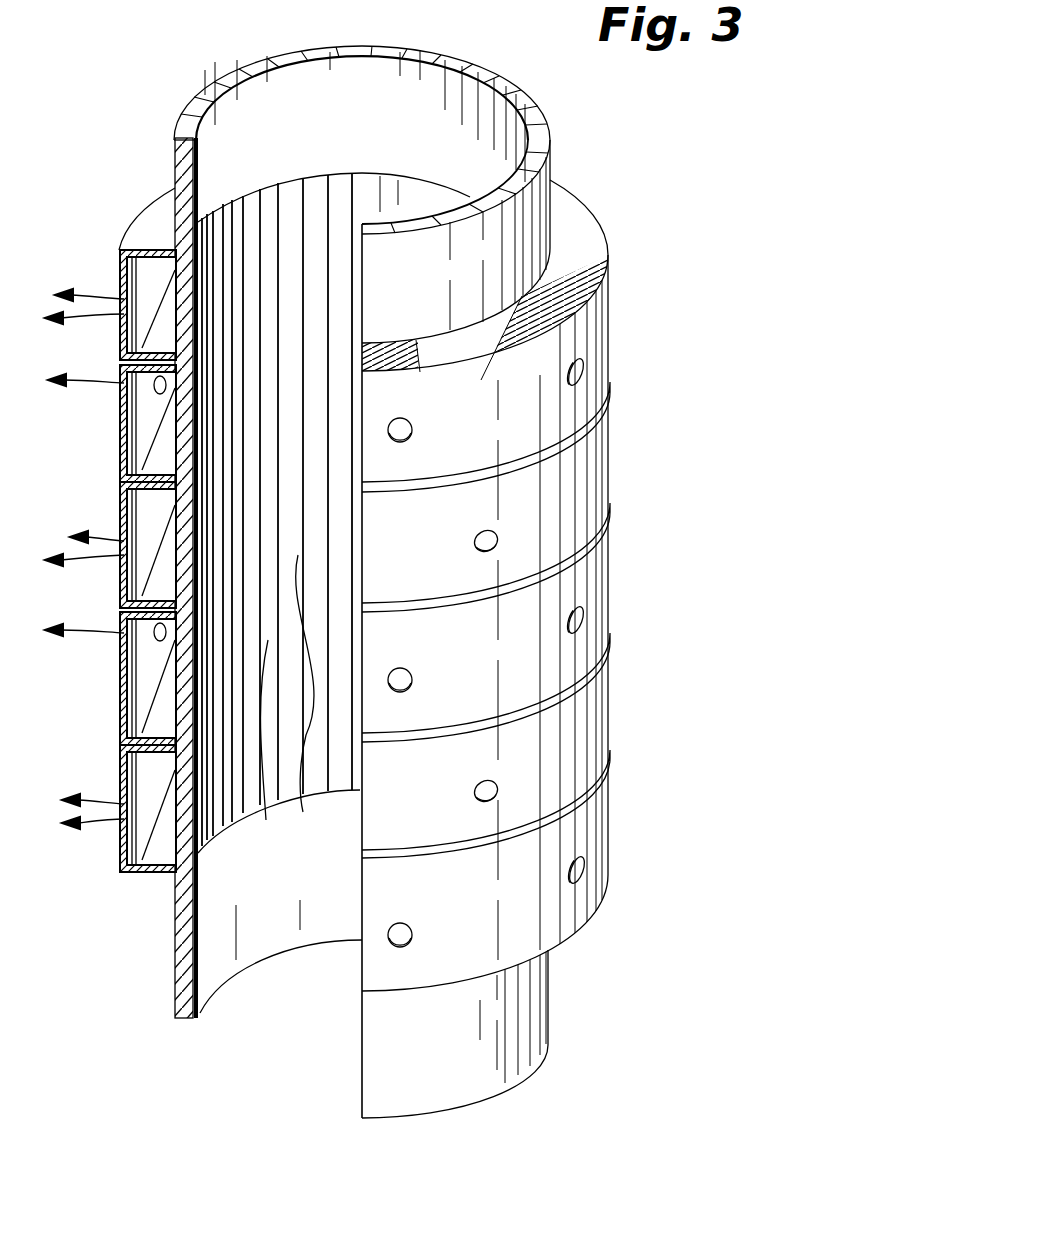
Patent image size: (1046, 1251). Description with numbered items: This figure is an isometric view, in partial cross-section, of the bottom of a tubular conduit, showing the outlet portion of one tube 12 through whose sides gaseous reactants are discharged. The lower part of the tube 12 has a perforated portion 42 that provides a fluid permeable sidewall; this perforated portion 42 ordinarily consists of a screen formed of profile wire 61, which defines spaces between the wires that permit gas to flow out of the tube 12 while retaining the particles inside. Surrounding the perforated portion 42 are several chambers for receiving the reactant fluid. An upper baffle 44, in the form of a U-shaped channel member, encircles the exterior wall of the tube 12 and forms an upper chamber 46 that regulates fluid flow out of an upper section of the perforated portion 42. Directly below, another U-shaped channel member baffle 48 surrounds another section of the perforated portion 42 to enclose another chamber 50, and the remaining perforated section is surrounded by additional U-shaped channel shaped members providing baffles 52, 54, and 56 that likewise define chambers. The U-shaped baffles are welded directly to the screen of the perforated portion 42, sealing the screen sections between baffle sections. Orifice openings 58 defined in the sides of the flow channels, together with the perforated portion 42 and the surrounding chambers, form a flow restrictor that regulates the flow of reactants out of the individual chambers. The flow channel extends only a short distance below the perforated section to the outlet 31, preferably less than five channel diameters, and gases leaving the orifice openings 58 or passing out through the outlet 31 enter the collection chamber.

The tube 12 is at (570, 139).
The outlet 31 is at (245, 1016).
The perforated portion 42 is at (268, 780).
The upper baffle 44 is at (609, 231).
The upper chamber 46 is at (120, 283).
The baffle 48 is at (609, 297).
The chamber 50 is at (122, 400).
The baffle 52 is at (609, 449).
The baffle 54 is at (609, 570).
The baffle 56 is at (609, 695).
The orifice openings 58 is at (412, 432).
The profile wire 61 is at (302, 770).